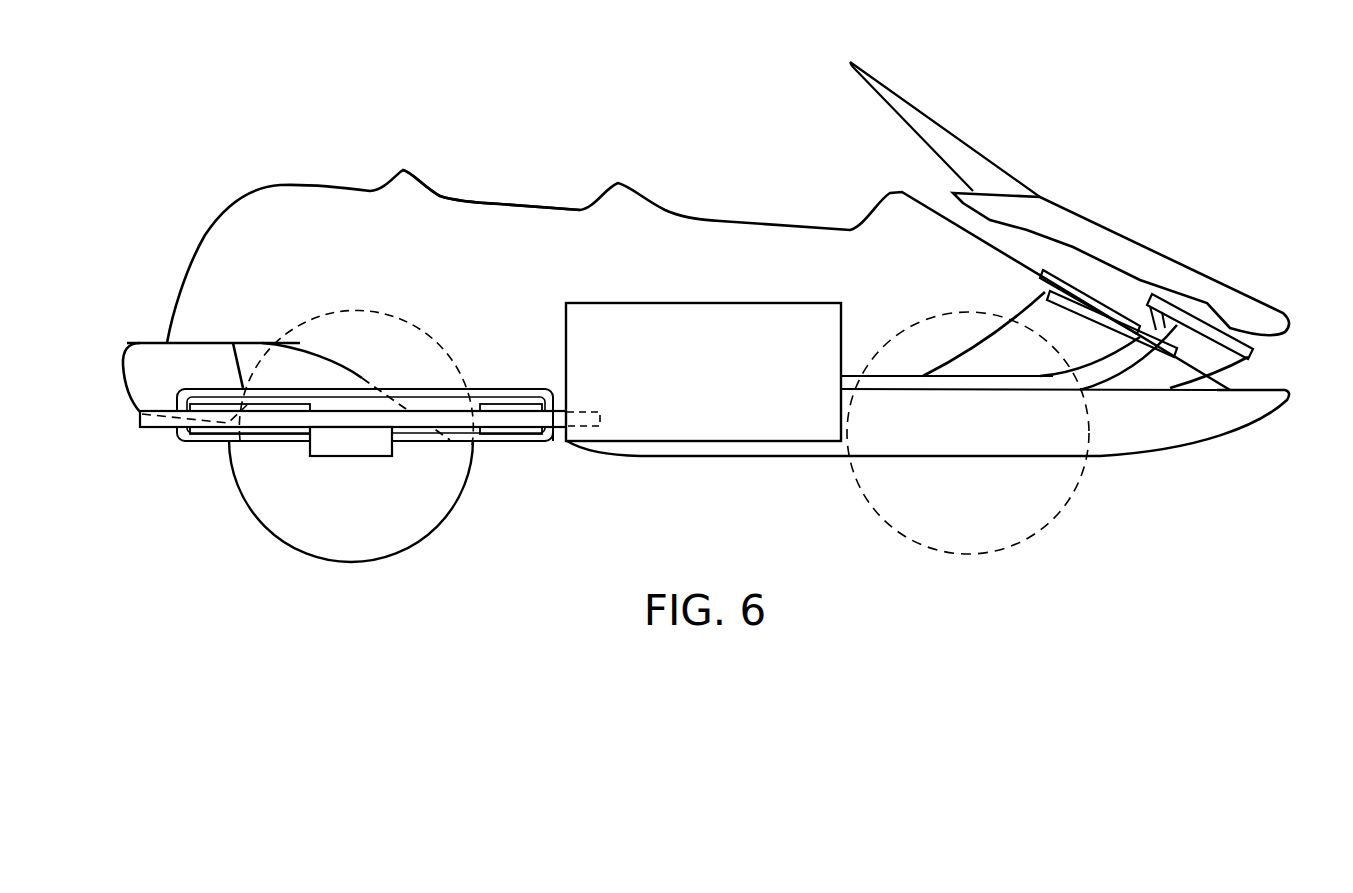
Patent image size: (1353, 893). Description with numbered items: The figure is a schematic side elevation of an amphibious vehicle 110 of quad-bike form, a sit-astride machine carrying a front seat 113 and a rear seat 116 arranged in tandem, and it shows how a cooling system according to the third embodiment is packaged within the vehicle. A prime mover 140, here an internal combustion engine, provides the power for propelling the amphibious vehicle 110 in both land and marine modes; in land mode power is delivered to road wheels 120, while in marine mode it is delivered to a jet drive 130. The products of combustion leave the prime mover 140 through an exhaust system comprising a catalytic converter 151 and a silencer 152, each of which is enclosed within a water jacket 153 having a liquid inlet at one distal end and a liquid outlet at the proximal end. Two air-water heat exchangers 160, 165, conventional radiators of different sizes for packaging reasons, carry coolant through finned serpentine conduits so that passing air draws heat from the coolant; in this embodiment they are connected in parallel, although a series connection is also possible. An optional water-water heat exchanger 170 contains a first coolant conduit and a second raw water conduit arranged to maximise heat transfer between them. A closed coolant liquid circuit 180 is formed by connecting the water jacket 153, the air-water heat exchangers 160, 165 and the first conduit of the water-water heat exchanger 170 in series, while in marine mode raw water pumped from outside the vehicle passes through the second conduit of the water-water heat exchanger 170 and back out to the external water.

The amphibious vehicle 110 is at (706, 251).
The front seat 113 is at (760, 222).
The rear seat 116 is at (524, 206).
The road wheels 120 is at (868, 505).
The jet drive 130 is at (224, 432).
The prime mover 140 is at (684, 385).
The catalytic converter 151 is at (535, 437).
The silencer 152 is at (238, 438).
The water jacket 153 is at (553, 441).
The air-water heat exchanger 160 is at (1255, 354).
The air-water heat exchanger 165 is at (1080, 297).
The water-water heat exchanger 170 is at (355, 457).
The closed coolant liquid circuit 180 is at (907, 377).